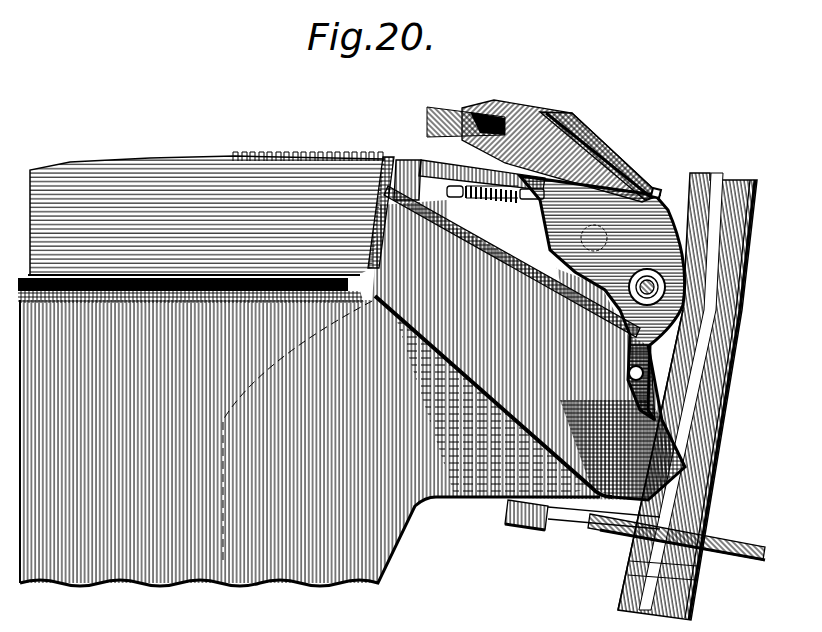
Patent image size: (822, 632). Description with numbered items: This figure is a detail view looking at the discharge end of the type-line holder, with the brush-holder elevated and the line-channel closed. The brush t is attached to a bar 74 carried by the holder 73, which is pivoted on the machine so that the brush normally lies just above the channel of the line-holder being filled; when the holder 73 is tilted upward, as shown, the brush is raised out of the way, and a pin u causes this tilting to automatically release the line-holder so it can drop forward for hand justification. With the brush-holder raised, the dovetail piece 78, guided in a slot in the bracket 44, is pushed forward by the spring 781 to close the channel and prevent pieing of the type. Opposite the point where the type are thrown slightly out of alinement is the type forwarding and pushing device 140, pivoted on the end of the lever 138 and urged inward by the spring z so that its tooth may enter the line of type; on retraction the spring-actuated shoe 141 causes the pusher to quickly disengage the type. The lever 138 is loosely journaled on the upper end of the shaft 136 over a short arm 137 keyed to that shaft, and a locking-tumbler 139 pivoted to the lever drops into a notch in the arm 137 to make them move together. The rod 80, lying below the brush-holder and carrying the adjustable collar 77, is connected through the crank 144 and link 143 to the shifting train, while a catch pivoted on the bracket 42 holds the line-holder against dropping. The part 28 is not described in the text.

The bracket 42 is at (157, 570).
The type forwarding and pushing device 140 is at (417, 160).
The spring-actuated shoe 141 is at (468, 161).
The brush t is at (431, 115).
The bar 74 is at (512, 112).
The holder 73 is at (590, 134).
The pin 28 is at (658, 188).
The lever 138 is at (778, 165).
The short arm 137 is at (745, 242).
The pin u is at (745, 258).
The shaft 136 is at (700, 407).
The adjustable collar 77 is at (688, 314).
The dovetail piece 78 is at (688, 330).
The spring 781 is at (688, 352).
The rod 80 is at (700, 288).
The spring z is at (483, 203).
The bracket 44 is at (700, 463).
The crank 144 is at (511, 517).
The link 143 is at (725, 540).
The locking-tumbler 139 is at (499, 629).